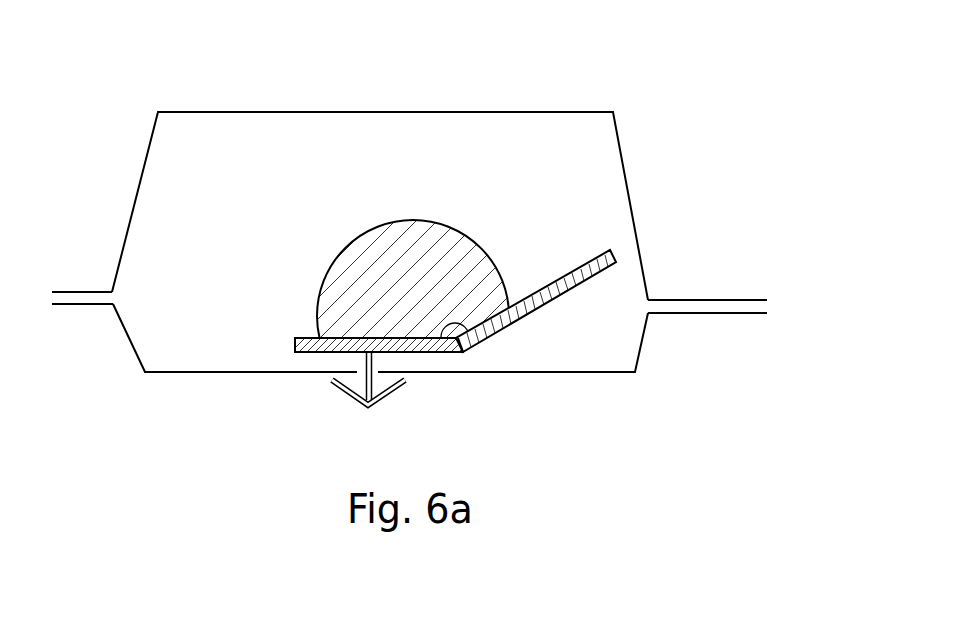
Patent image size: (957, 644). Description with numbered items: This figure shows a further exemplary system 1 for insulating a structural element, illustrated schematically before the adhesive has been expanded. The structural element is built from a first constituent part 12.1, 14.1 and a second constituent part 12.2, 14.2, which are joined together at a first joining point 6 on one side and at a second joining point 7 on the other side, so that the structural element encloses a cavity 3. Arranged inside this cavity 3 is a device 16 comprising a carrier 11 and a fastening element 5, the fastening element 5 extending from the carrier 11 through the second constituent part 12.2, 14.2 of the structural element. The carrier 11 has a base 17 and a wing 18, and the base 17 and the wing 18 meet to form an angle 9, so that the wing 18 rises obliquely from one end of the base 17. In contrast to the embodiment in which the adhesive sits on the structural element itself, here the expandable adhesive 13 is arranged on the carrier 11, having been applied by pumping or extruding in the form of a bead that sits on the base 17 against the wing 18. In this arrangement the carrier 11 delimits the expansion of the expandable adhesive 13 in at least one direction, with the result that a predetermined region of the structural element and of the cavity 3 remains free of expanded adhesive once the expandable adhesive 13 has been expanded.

The system 1 is at (223, 68).
The cavity 3 is at (184, 253).
The fastening element 5 is at (380, 408).
The first joining point 6 is at (112, 295).
The second joining point 7 is at (650, 303).
The angle 9 is at (467, 352).
The carrier 11 is at (539, 345).
The first constituent part of the structural element 12.1 is at (380, 161).
The first constituent part of the structural element 14.1 is at (548, 112).
The second constituent part of the structural element 12.2 is at (380, 378).
The second constituent part of the structural element 14.2 is at (173, 372).
The expandable adhesive 13 is at (400, 218).
The device 16 is at (511, 336).
The base 17 is at (418, 352).
The wing 18 is at (539, 345).